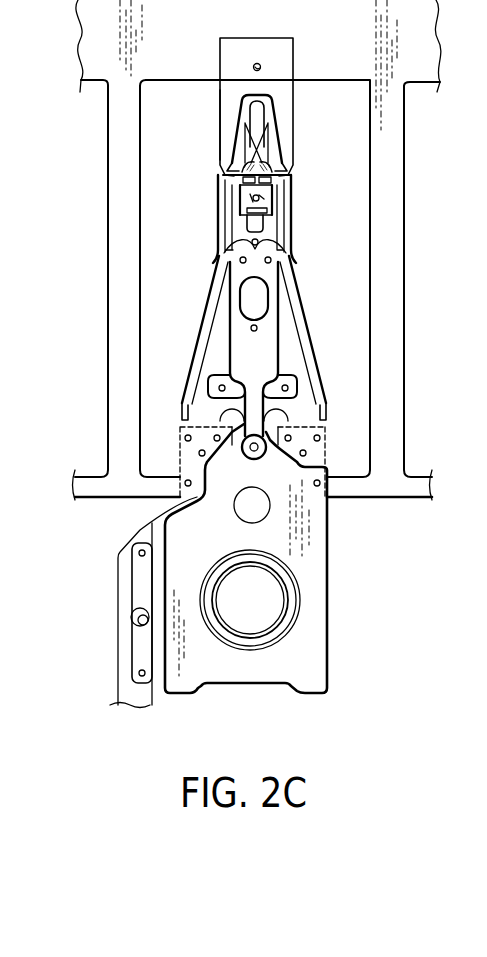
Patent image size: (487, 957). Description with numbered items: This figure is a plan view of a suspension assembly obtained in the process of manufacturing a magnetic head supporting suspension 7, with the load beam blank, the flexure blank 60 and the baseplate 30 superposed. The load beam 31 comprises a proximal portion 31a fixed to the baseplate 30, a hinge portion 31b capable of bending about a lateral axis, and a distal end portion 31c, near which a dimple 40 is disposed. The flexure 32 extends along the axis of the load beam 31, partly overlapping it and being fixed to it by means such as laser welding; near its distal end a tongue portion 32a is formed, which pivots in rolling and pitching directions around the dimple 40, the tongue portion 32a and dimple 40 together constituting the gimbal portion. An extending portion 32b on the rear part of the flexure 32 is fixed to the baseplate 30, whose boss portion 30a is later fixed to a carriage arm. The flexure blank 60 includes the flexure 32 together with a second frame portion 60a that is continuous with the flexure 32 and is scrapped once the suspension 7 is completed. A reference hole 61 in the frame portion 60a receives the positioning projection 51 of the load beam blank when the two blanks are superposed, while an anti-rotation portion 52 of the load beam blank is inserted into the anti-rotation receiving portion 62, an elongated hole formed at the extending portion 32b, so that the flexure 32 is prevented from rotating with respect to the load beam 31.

The magnetic head supporting suspension 7 is at (430, 200).
The flexure blank 60 is at (308, 133).
The second frame portion 60a is at (221, 98).
The reference hole 61 is at (255, 63).
The positioning projection 51 is at (261, 67).
The distal end portion 31c is at (268, 104).
The tongue portion 32a is at (266, 202).
The dimple 40 is at (265, 193).
The flexure 32 is at (263, 351).
The load beam 31 is at (215, 342).
The hinge portion 31b is at (185, 413).
The proximal portion 31a is at (178, 457).
The baseplate 30 is at (318, 587).
The boss portion 30a is at (288, 612).
The extending portion 32b is at (120, 580).
The anti-rotation receiving portion 62 is at (137, 618).
The anti-rotation portion 52 is at (143, 624).